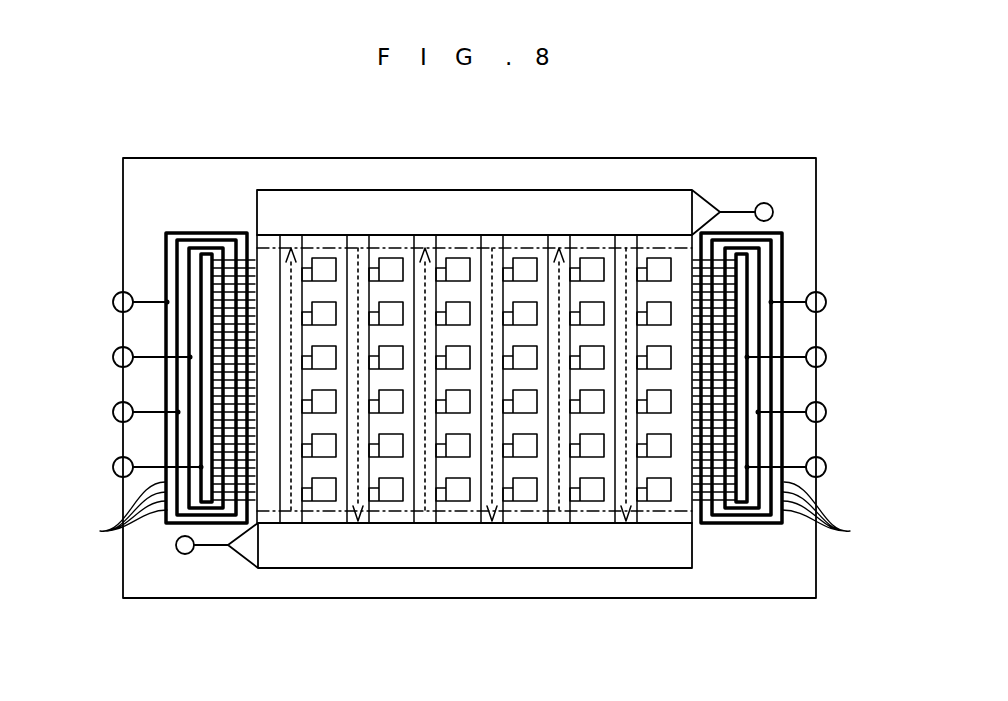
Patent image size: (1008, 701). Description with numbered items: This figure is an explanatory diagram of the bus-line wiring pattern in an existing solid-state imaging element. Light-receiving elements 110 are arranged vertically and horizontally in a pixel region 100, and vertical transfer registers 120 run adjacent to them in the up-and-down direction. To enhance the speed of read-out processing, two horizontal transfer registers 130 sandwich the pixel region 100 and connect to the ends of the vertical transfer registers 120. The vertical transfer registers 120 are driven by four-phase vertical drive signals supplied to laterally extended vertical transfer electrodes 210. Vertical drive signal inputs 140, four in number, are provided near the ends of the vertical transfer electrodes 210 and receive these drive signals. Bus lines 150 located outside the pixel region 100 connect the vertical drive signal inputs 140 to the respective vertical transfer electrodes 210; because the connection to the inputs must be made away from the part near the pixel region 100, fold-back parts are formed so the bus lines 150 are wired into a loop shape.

The pixel region 100 is at (667, 505).
The light-receiving element 110 is at (593, 505).
The vertical transfer register 120 is at (506, 508).
The horizontal transfer register 130 is at (637, 202).
The vertical drive signal input 140 is at (113, 467).
The bus line 150 is at (477, 512).
The vertical transfer electrode 210 is at (213, 278).